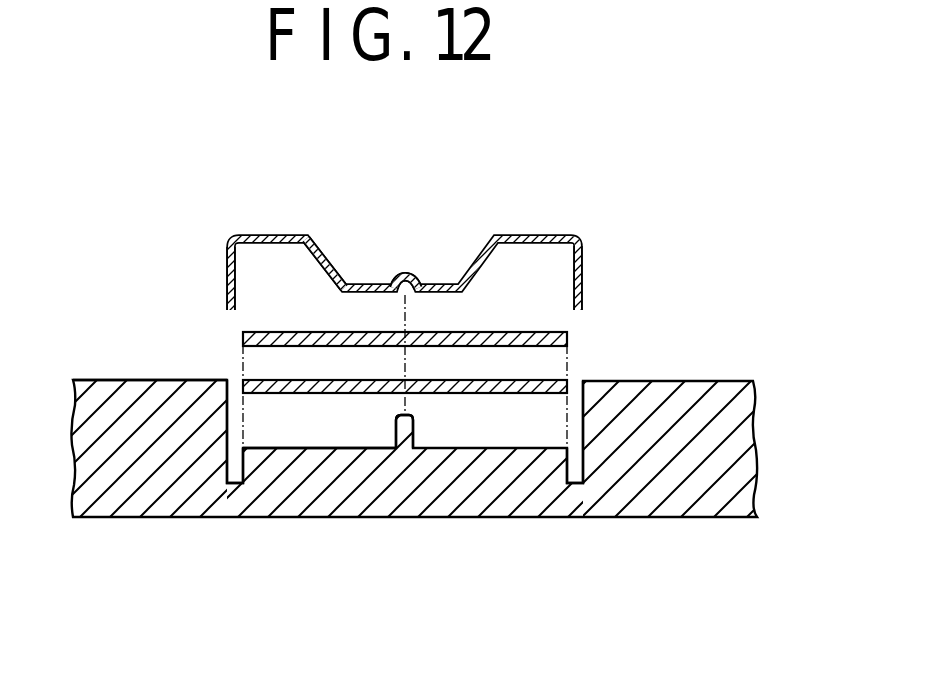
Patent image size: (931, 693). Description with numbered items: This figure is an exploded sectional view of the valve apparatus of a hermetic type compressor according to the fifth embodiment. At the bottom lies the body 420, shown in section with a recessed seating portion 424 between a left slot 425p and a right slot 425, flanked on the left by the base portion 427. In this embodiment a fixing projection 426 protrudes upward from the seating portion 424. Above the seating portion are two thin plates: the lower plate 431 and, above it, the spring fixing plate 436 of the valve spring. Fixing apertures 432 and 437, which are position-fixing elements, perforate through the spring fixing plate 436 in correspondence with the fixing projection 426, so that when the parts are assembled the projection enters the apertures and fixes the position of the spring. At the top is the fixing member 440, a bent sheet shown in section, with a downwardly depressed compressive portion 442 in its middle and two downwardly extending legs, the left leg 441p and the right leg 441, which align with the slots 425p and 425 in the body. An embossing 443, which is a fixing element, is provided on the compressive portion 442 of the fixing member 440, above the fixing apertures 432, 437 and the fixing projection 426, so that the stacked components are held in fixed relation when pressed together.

The base body 420 is at (737, 382).
The seating portion 424 is at (327, 423).
The slot 425 is at (575, 487).
The slot (425') 425p is at (236, 483).
The fixing projection 426 is at (413, 433).
The base portion 427 is at (130, 380).
The lower plate 431 is at (567, 363).
The fixing aperture 432 is at (447, 331).
The spring fixing plate 436 is at (564, 330).
The fixing aperture 437 is at (412, 375).
The fixing member 440 is at (267, 222).
The leg 441 is at (584, 272).
The leg (441') 441p is at (227, 282).
The compressive portion 442 is at (363, 283).
The embossing 443 is at (405, 273).